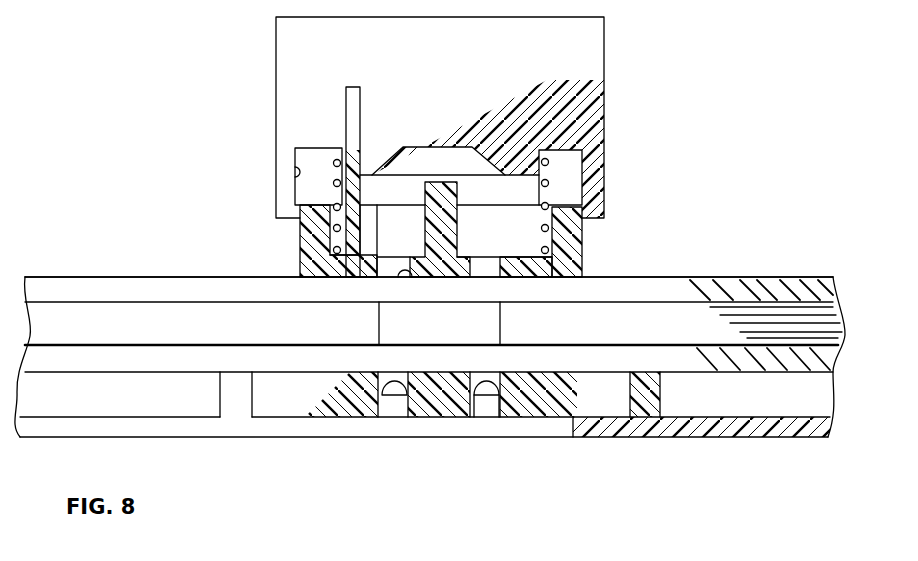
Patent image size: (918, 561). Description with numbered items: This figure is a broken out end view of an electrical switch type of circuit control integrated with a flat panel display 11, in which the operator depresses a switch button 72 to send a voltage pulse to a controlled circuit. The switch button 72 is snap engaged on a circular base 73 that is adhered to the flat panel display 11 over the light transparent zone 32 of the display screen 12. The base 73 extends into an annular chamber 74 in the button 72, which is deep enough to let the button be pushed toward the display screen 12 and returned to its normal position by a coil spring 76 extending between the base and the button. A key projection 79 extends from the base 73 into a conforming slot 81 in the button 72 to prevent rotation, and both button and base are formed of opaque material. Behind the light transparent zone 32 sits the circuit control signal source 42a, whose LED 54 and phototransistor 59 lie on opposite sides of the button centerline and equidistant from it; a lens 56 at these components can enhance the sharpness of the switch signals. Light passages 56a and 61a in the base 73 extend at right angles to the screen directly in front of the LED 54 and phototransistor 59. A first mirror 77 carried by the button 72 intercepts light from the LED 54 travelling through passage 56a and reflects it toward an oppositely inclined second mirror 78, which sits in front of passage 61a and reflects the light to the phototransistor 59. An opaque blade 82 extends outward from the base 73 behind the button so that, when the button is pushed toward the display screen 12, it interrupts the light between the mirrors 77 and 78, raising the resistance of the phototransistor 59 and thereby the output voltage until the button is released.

The flat panel display 11 is at (714, 252).
The display screen 12 is at (107, 278).
The light transparent zone 32 is at (503, 320).
The circuit control signal source 42a is at (568, 418).
The LED 54 is at (392, 375).
The lens 56 is at (482, 375).
The light passage 56a is at (405, 280).
The phototransistor 59 is at (487, 412).
The light passage 61a is at (470, 272).
The switch button 72 is at (604, 52).
The circular base 73 is at (582, 240).
The annular chamber 74 is at (294, 172).
The coil spring 76 is at (336, 147).
The first mirror 77 is at (380, 168).
The second mirror 78 is at (492, 150).
The key projection 79 is at (360, 227).
The slot 81 is at (356, 92).
The opaque blade 82 is at (440, 182).